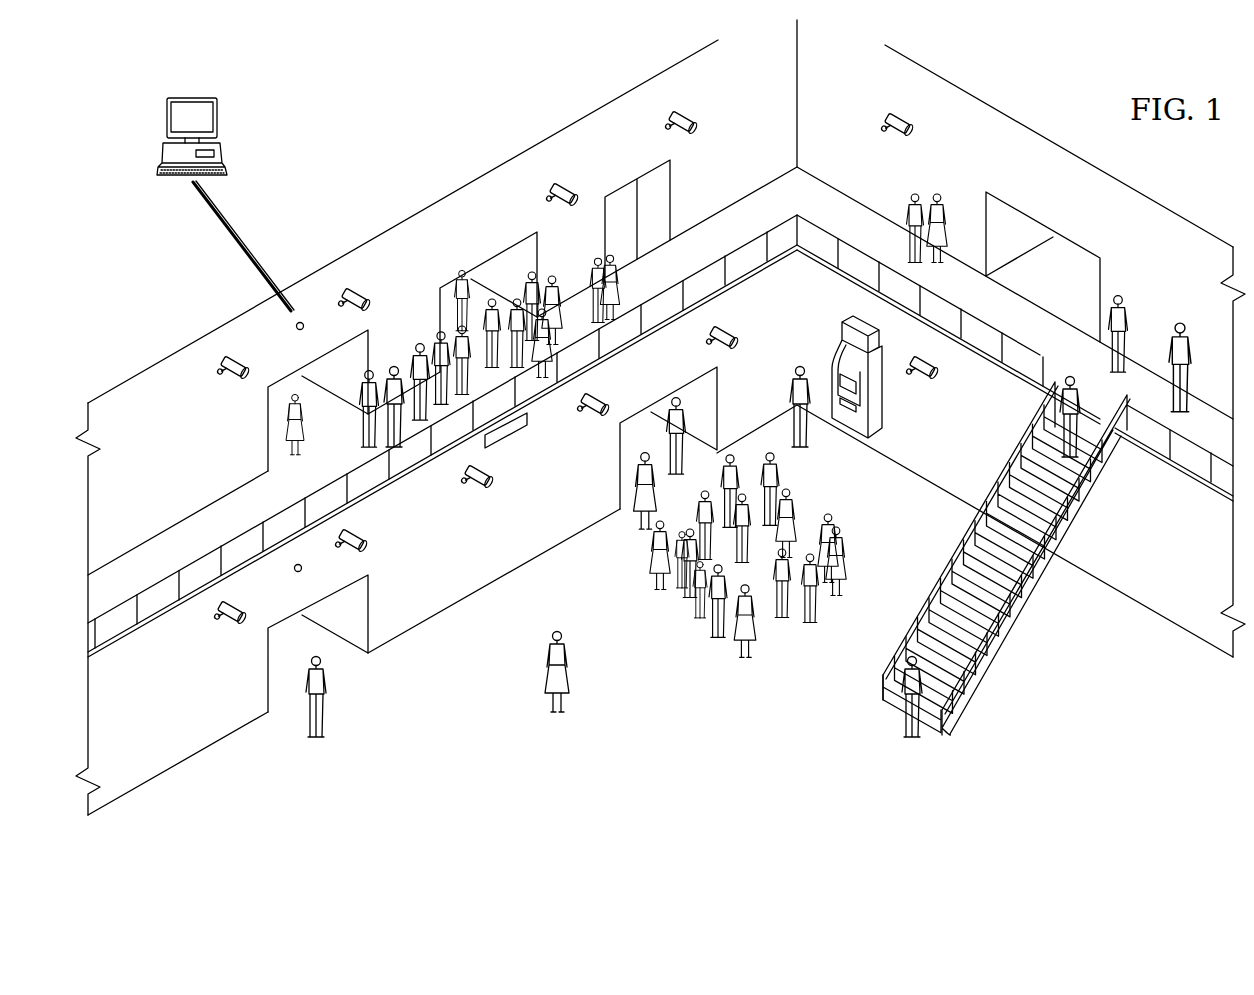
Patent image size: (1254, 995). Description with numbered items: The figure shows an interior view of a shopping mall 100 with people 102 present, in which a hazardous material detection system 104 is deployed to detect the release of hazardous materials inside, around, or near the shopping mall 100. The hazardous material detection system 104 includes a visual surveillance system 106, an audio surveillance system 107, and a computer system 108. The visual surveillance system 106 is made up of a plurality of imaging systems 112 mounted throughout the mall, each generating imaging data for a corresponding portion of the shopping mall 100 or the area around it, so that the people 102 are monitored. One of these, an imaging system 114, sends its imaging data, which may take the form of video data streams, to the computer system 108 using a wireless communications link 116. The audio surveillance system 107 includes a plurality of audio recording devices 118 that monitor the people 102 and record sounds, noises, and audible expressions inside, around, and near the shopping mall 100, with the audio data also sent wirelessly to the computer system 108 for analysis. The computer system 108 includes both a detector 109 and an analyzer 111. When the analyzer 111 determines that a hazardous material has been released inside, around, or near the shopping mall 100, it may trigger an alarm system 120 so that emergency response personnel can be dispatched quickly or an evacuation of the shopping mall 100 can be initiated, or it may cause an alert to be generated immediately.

The shopping mall 100 is at (874, 755).
The people 102 is at (856, 531).
The hazardous material detection system 104 is at (706, 107).
The visual surveillance system 106 is at (374, 527).
The audio surveillance system 107 is at (293, 321).
The computer system 108 is at (187, 113).
The detector 109 is at (216, 94).
The analyzer 111 is at (187, 108).
The plurality of imaging systems 112 is at (366, 292).
The imaging system 114 is at (241, 361).
The wireless communications link 116 is at (226, 221).
The plurality of audio recording devices 118 is at (293, 566).
The alarm system 120 is at (527, 413).